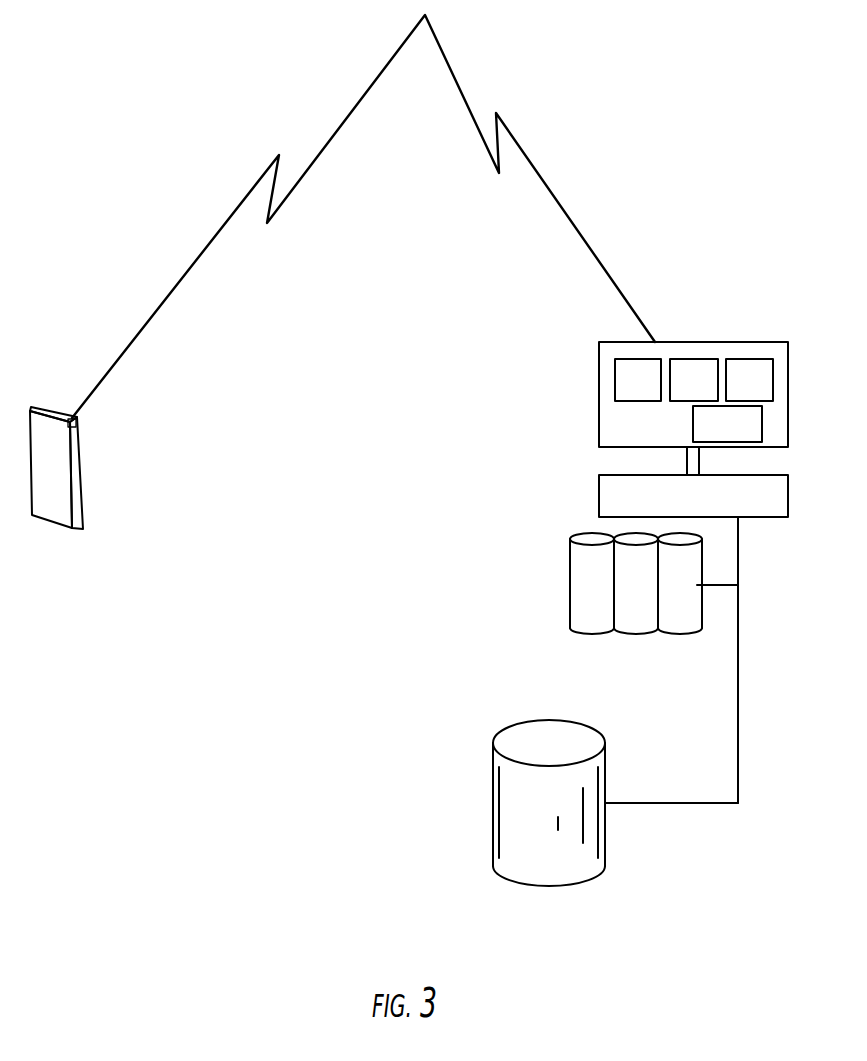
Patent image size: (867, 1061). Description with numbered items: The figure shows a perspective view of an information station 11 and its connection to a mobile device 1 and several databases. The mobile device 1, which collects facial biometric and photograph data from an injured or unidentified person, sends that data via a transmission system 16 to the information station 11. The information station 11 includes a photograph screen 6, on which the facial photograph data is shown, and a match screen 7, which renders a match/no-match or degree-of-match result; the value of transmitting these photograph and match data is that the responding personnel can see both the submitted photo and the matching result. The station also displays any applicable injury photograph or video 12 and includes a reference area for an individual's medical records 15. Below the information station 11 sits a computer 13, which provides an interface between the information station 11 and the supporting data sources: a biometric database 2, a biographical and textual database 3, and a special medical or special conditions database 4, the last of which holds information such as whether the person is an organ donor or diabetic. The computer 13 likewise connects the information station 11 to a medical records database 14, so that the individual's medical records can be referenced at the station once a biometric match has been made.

The mobile device 1 is at (50, 410).
The biometric database 2 is at (578, 601).
The biographical and textual database 3 is at (634, 626).
The special medical or special conditions database 4 is at (678, 626).
The photograph screen 6 is at (623, 370).
The match screen 7 is at (683, 391).
The information station 11 is at (750, 341).
The injury photograph or video 12 is at (763, 388).
The computer 13 is at (598, 501).
The medical records database 14 is at (493, 781).
The individual medical records 15 is at (738, 439).
The transmission system 16 is at (360, 99).